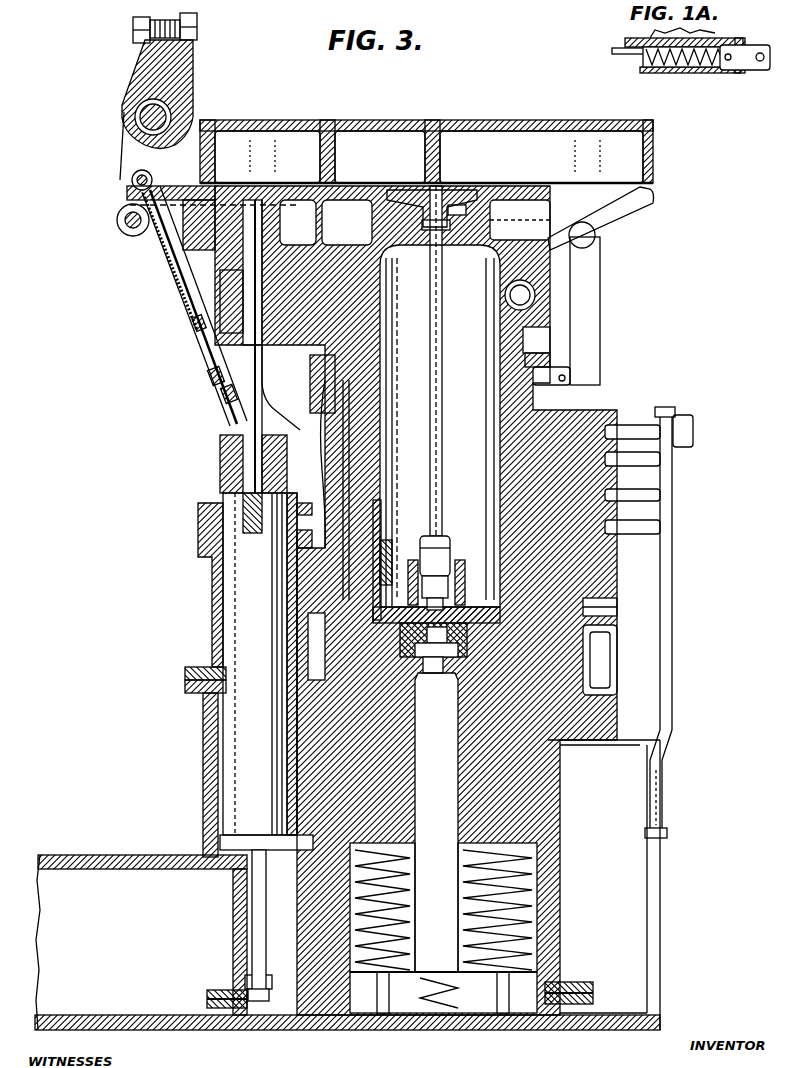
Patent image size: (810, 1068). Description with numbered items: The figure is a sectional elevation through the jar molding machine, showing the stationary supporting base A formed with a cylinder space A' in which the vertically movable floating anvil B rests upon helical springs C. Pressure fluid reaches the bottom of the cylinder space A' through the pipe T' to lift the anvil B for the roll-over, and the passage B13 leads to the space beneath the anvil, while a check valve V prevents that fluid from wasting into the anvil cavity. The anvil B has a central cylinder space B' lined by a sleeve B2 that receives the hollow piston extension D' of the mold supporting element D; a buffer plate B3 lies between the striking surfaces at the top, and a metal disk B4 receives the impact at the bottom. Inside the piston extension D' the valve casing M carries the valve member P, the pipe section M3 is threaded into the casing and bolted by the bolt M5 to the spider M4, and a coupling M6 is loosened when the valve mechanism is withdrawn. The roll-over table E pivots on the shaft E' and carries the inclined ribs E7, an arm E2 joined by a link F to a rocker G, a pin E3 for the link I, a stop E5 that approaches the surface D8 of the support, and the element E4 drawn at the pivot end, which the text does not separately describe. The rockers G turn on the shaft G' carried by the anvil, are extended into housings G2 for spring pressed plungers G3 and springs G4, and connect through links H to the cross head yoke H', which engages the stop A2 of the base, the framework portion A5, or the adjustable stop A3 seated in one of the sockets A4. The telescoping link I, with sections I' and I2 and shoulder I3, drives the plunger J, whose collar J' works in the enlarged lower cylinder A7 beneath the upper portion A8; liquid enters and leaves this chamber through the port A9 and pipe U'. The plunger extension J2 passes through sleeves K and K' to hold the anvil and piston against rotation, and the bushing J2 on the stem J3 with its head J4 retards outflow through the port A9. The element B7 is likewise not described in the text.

In FIG. 3, the stationary supporting base A is at (141, 926).
In FIG. 3, the cylinder space A' is at (600, 885).
In FIG. 3, the shoulder or stop A2 is at (617, 605).
In FIG. 3, the stop A3 is at (655, 525).
In FIG. 3, the sockets A4 is at (615, 527).
In FIG. 3, the portion of supporting framework A5 is at (665, 715).
In FIG. 3, the enlarged lower cylinder portion A7 is at (210, 778).
In FIG. 3, the upper cylinder portion A8 is at (212, 630).
In FIG. 3, the port A9 is at (232, 878).
In FIG. 3, the floating anvil B is at (416, 600).
In FIG. 3, the central cavity or cylinder space B' is at (403, 429).
In FIG. 3, the sleeve B2 is at (388, 352).
In FIG. 3, the washer or buffer plate B3 is at (313, 360).
In FIG. 3, the metal disk B4 is at (373, 614).
In FIG. 3, the valve seat block B7 is at (400, 630).
In FIG. 3, the passage B13 is at (436, 822).
In FIG. 3, the helical springs C is at (352, 940).
In FIG. 3, the mold supporting element D is at (601, 218).
In FIG. 3, the piston extension D' is at (470, 429).
In FIG. 3, the surface of member D D8 is at (160, 270).
In FIG. 3, the roll-over table E is at (426, 134).
In FIG. 3, the shaft E' is at (121, 117).
In FIG. 3, the arm of table E2 is at (120, 197).
In FIG. 3, the pin E3 is at (132, 177).
In FIG. 3, the lever arm E4 is at (183, 72).
In FIG. 3, the stop E5 is at (130, 40).
In FIG. 3, the inclined guides or ribs E7 is at (265, 130).
In FIG. 3, the links F is at (380, 157).
In FIG. 1A, the rockers G is at (664, 44).
In FIG. 3, the shaft G' is at (573, 312).
In FIG. 1A, the housings G2 is at (668, 73).
In FIG. 3, the spring pressed plungers G3 is at (560, 360).
In FIG. 1A, the spring pressed plungers G3 is at (748, 72).
In FIG. 1A, the springs G4 is at (625, 52).
In FIG. 3, the links H is at (604, 311).
In FIG. 3, the cross head yoke H' is at (644, 660).
In FIG. 3, the links I is at (177, 306).
In FIG. 3, the telescoping section I' is at (170, 261).
In FIG. 3, the telescoping section I2 is at (232, 412).
In FIG. 3, the shoulder I3 is at (225, 437).
In FIG. 3, the plunger J is at (267, 664).
In FIG. 3, the collar J' is at (266, 818).
In FIG. 3, the axial extension / retarding bushing J2 is at (300, 372).
In FIG. 3, the stem J3 is at (252, 910).
In FIG. 3, the head J4 is at (270, 997).
In FIG. 3, the sleeve K is at (229, 272).
In FIG. 3, the sleeve K' is at (298, 222).
In FIG. 3, the valve casing M is at (418, 560).
In FIG. 3, the pipe section M3 is at (430, 297).
In FIG. 3, the spider M4 is at (462, 205).
In FIG. 3, the bolt M5 is at (432, 196).
In FIG. 3, the coupling M6 is at (466, 262).
In FIG. 3, the valve member P is at (440, 536).
In FIG. 3, the pipe T' is at (584, 980).
In FIG. 3, the pipe U' is at (226, 985).
In FIG. 3, the check valve V is at (428, 673).